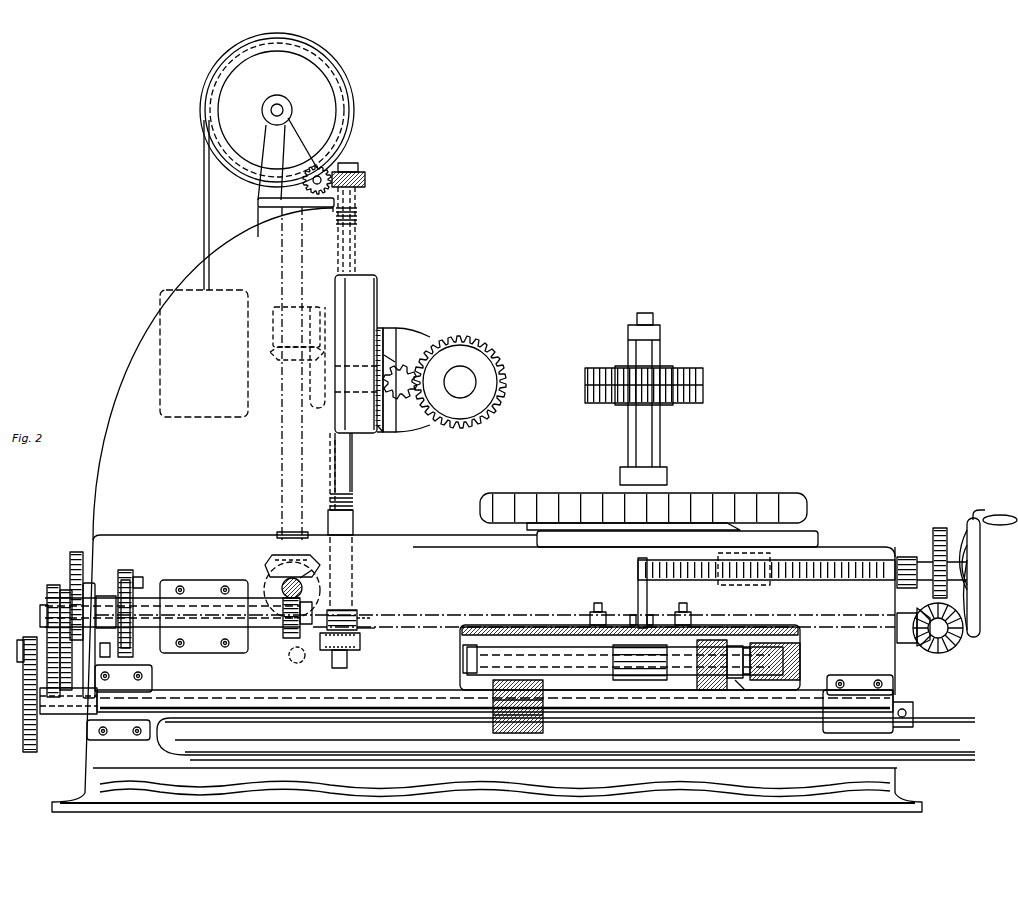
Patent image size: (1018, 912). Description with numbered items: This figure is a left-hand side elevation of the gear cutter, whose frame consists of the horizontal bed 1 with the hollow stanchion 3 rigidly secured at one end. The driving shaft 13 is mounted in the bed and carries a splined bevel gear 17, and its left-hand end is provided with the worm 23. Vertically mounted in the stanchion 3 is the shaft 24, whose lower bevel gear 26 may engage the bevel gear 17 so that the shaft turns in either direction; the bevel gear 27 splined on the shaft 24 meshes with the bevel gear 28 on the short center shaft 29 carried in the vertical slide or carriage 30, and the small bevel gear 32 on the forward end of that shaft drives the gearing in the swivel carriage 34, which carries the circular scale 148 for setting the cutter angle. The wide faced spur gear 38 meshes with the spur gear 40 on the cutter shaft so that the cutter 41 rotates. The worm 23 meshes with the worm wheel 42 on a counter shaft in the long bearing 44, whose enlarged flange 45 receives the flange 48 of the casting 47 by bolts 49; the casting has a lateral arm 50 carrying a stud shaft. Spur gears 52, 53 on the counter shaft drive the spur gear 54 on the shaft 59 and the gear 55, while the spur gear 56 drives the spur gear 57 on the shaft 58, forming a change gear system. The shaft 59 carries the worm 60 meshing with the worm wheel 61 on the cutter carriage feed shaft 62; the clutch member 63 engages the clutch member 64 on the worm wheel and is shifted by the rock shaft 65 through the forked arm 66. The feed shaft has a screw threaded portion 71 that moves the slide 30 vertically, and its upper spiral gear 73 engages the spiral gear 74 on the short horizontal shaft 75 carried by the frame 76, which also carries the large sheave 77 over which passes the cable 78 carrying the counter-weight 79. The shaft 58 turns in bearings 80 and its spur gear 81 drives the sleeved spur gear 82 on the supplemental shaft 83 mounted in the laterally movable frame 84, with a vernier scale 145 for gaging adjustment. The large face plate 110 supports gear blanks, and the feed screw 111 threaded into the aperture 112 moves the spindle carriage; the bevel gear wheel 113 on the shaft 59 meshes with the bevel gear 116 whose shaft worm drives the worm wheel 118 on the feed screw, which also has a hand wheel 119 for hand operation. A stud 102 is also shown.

The horizontal bed 1 is at (487, 673).
The stanchion 3 is at (213, 374).
The driving shaft 13 is at (272, 580).
The bevel gear 17 is at (312, 576).
The worm 23 is at (281, 591).
The vertical shaft 24 is at (285, 445).
The bevel gear 26 is at (316, 556).
The bevel gear 27 is at (278, 358).
The bevel gear 28 is at (316, 400).
The center shaft 29 is at (356, 385).
The vertical slide or carriage 30 is at (359, 354).
The small bevel gear 32 is at (393, 364).
The swivel carriage 34 is at (392, 330).
The wide faced spur gear 38 is at (400, 382).
The spur gear 40 is at (460, 382).
The cutter 41 is at (818, 538).
The worm wheel 42 is at (845, 547).
The long bearing 44 is at (210, 632).
The enlarged flange 45 is at (130, 578).
The casting 47 is at (106, 596).
The flange 48 is at (125, 570).
The bolts 49 is at (143, 580).
The lateral arm 50 is at (88, 700).
The spur gear 52 is at (66, 590).
The spur gear 53 is at (50, 588).
The spur gear 54 is at (77, 552).
The gear 55 is at (55, 714).
The spur gear 56 is at (40, 617).
The spur gear 57 is at (30, 752).
The shaft 58 is at (252, 690).
The shaft 59 is at (436, 615).
The worm 60 is at (358, 613).
The worm wheel 61 is at (375, 614).
The cutter carriage feed shaft 62 is at (350, 578).
The clutch member 63 is at (360, 642).
The clutch member 64 is at (368, 630).
The rock shaft 65 is at (297, 663).
The forked arm 66 is at (332, 660).
The screw threaded portion 71 is at (357, 218).
The spiral gear 73 is at (365, 180).
The spiral gear 74 is at (320, 165).
The short horizontal shaft 75 is at (305, 184).
The frame 76 is at (296, 181).
The large sheave 77 is at (277, 110).
The cable 78 is at (204, 186).
The counter-weight 79 is at (160, 296).
The bearings 80 is at (152, 686).
The spur gear 81 is at (543, 718).
The sleeved spur gear 82 is at (542, 625).
The supplemental shaft 83 is at (467, 657).
The laterally movable frame 84 is at (705, 625).
The stud 102 is at (647, 592).
The face plate 110 is at (532, 493).
The feed screw 111 is at (766, 579).
The nut or screw threaded aperture 112 is at (768, 585).
The bevel gear wheel 113 is at (920, 646).
The bevel gear 116 is at (952, 648).
The worm wheel 118 is at (940, 528).
The hand wheel 119 is at (980, 570).
The vernier scale 145 is at (748, 688).
The circular scale 148 is at (380, 433).